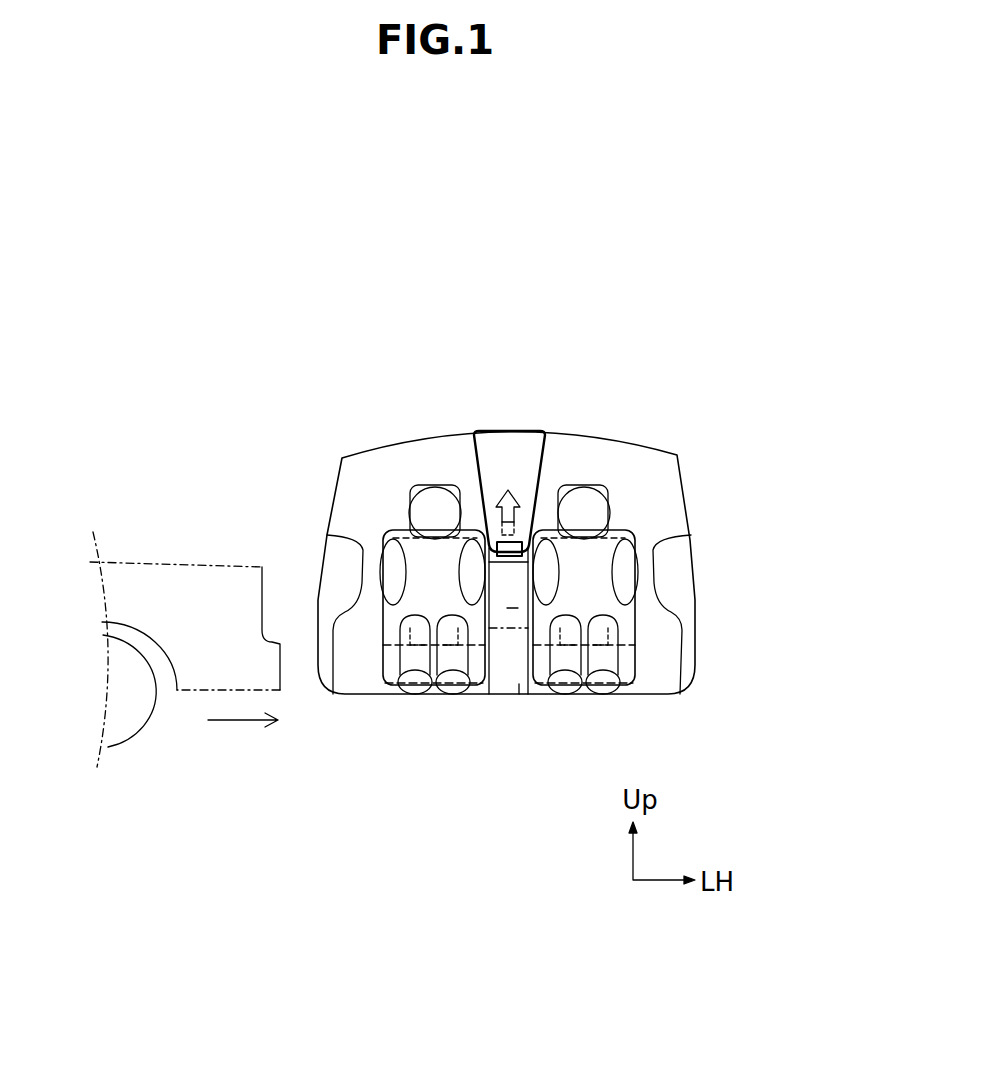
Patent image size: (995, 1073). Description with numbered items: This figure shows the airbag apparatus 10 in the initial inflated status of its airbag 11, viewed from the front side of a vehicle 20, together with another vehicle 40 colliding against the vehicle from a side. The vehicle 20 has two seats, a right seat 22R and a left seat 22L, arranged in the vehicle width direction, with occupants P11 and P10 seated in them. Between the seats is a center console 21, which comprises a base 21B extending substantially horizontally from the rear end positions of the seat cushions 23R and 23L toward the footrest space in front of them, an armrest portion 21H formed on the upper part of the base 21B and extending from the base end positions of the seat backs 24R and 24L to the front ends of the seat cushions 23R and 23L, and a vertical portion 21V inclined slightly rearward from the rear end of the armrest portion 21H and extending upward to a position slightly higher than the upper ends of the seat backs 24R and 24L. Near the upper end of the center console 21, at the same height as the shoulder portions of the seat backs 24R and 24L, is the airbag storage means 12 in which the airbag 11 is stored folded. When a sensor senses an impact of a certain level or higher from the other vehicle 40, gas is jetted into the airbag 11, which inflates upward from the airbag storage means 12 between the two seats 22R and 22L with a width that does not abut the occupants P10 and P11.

The airbag apparatus 10 is at (467, 468).
The airbag 11 is at (504, 450).
The airbag storage means 12 is at (511, 557).
The vehicle 20 is at (575, 418).
The center console 21 is at (503, 682).
The base 21B is at (520, 684).
The armrest portion 21H is at (532, 608).
The vertical portion 21V is at (538, 562).
The right seat 22R is at (388, 530).
The left seat 22L is at (628, 522).
The seat cushion 23R is at (378, 663).
The seat cushion 23L is at (640, 666).
The seat back 24R is at (372, 617).
The seat back 24L is at (655, 558).
The another vehicle 40 is at (153, 550).
The occupant P10 is at (587, 500).
The occupant P11 is at (420, 503).